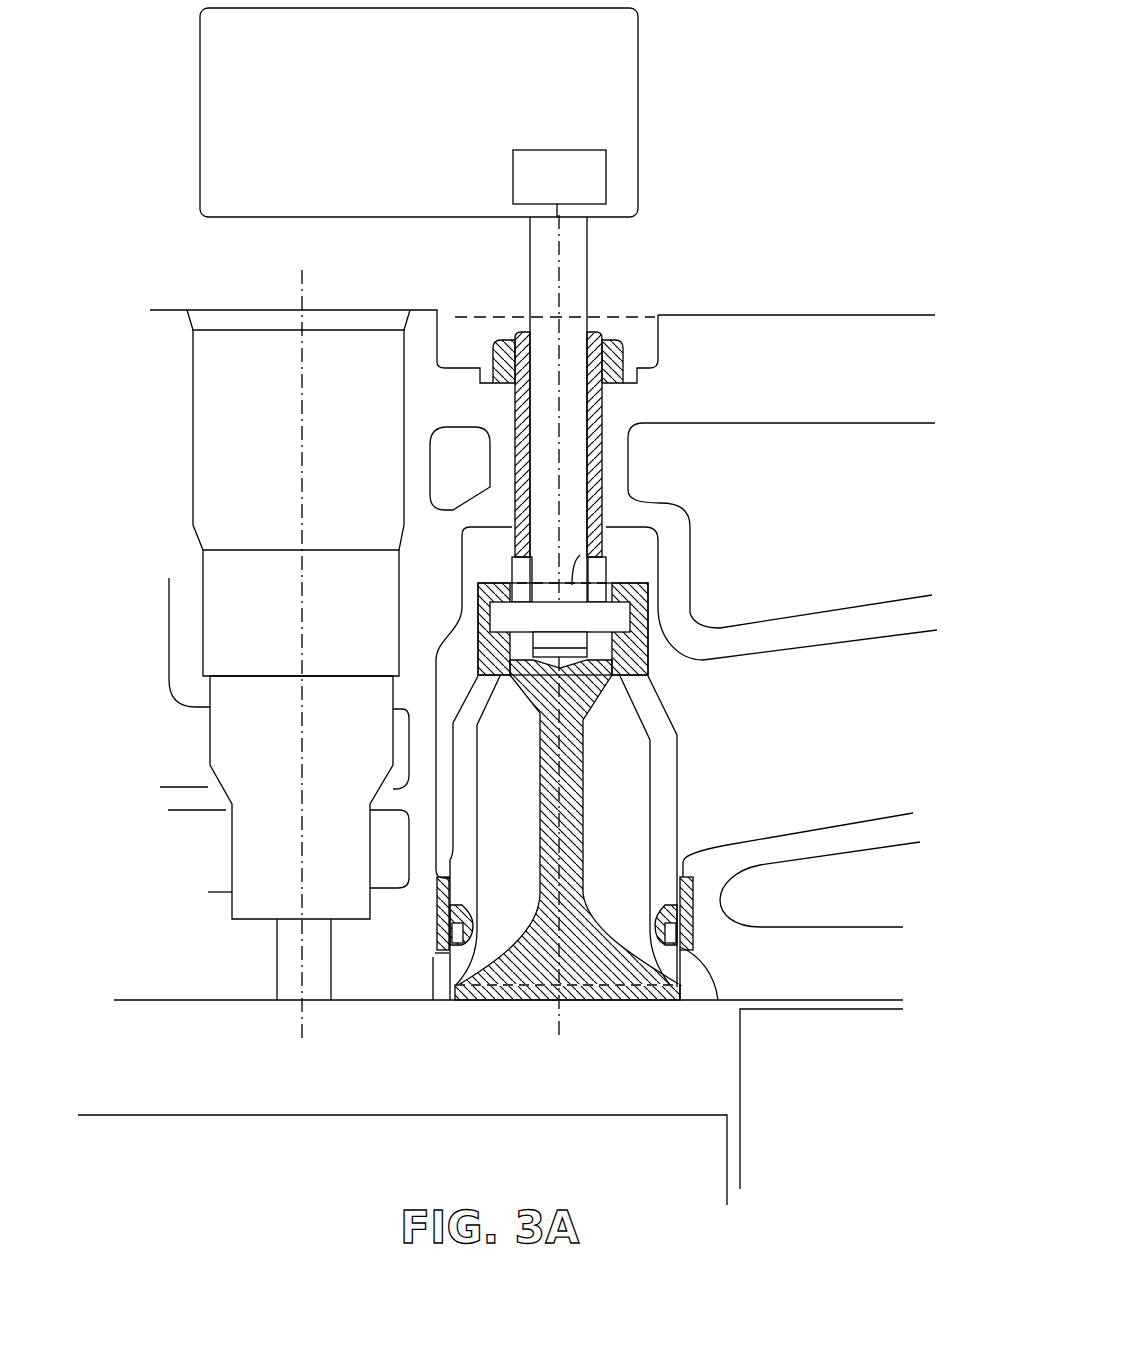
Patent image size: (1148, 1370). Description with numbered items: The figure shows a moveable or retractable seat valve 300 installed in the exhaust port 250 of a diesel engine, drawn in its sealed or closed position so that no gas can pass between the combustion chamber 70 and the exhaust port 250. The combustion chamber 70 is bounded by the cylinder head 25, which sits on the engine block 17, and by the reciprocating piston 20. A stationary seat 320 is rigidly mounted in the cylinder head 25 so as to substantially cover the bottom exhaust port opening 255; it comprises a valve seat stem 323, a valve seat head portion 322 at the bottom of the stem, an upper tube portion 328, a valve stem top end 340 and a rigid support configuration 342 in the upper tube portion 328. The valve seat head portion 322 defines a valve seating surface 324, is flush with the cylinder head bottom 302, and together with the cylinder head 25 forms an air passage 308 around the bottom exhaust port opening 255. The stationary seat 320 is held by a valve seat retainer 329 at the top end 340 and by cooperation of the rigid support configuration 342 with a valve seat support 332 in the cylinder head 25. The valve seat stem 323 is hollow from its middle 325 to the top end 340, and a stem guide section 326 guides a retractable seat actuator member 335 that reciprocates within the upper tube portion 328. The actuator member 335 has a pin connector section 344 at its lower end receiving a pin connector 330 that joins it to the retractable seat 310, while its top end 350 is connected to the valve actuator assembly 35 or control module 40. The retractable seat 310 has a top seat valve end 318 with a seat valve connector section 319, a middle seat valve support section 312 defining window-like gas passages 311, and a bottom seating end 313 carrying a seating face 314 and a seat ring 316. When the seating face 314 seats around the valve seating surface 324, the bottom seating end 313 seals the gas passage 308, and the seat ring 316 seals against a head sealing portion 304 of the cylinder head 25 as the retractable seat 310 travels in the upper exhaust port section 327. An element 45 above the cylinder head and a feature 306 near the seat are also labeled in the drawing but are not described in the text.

The engine block 17 is at (815, 1102).
The reciprocating piston 20 is at (175, 1124).
The cylinder head 25 is at (763, 333).
The valve actuator assembly 35 is at (599, 190).
The control module 40 is at (339, 85).
The lift actuator 45 is at (256, 402).
The combustion chamber 70 is at (283, 1095).
The exhaust port 250 is at (890, 723).
The bottom exhaust port opening 255 is at (536, 927).
The retractable seat valve 300 is at (815, 152).
The cylinder head bottom 302 is at (215, 1001).
The head sealing portion 304 is at (440, 913).
The lower flange 306 is at (414, 1001).
The air passage 308 is at (433, 957).
The retractable seat 310 is at (678, 740).
The window-like gas passages 311 is at (665, 828).
The middle seat valve support section 312 is at (667, 793).
The bottom seating end 313 is at (697, 1001).
The seating face 314 is at (481, 1000).
The seat ring 316 is at (693, 947).
The top seat valve end 318 is at (652, 656).
The seat valve connector section 319 is at (645, 617).
The stationary seat 320 is at (585, 760).
The valve seat head portion 322 is at (587, 968).
The valve seat stem 323 is at (585, 862).
The valve seating surface 324 is at (637, 1001).
The middle of the valve seat stem 325 is at (553, 668).
The stem guide section 326 is at (597, 573).
The upper exhaust port section 327 is at (640, 548).
The upper tube portion 328 is at (518, 462).
The valve seat retainer 329 is at (618, 338).
The pin connector 330 is at (507, 608).
The valve seat support 332 is at (510, 521).
The retractable seat actuator member 335 is at (568, 465).
The valve stem top end 340 is at (603, 318).
The rigid support configuration 342 is at (520, 533).
The pin connector section 344 is at (603, 556).
The top end of the actuator member 350 is at (585, 233).